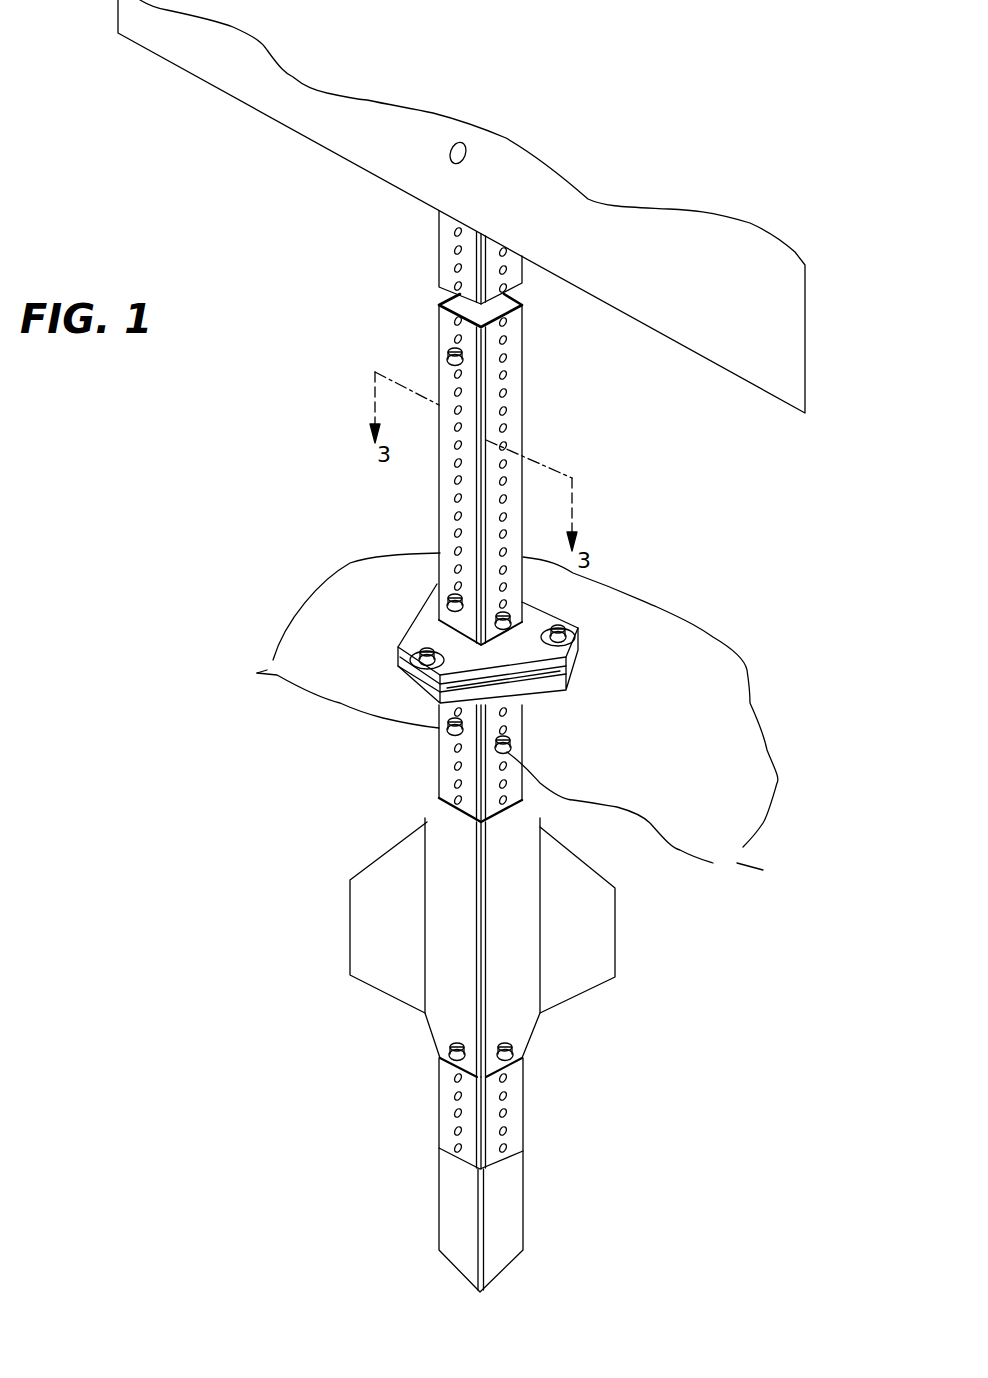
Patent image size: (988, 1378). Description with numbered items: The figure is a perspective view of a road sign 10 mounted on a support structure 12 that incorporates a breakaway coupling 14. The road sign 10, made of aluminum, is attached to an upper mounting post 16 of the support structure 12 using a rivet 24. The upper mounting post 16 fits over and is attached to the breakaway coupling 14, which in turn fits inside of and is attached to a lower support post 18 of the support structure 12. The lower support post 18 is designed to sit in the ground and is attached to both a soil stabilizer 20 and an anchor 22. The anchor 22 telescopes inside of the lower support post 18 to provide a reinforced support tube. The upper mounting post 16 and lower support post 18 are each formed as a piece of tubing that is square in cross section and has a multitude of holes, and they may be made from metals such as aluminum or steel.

The road sign 10 is at (322, 127).
The support structure 12 is at (712, 584).
The breakaway coupling 14 is at (417, 635).
The upper mounting post 16 is at (447, 321).
The lower support post 18 is at (446, 748).
The soil stabilizer 20 is at (377, 928).
The anchor 22 is at (502, 1204).
The rivet 24 is at (455, 155).